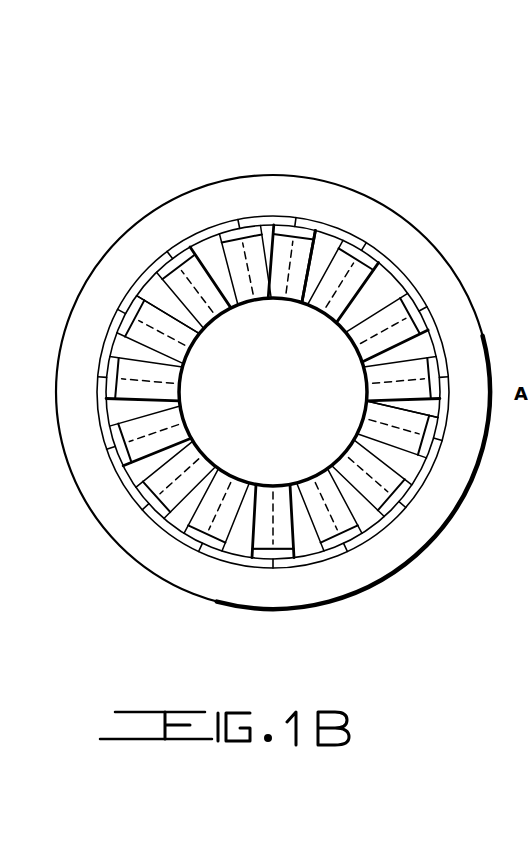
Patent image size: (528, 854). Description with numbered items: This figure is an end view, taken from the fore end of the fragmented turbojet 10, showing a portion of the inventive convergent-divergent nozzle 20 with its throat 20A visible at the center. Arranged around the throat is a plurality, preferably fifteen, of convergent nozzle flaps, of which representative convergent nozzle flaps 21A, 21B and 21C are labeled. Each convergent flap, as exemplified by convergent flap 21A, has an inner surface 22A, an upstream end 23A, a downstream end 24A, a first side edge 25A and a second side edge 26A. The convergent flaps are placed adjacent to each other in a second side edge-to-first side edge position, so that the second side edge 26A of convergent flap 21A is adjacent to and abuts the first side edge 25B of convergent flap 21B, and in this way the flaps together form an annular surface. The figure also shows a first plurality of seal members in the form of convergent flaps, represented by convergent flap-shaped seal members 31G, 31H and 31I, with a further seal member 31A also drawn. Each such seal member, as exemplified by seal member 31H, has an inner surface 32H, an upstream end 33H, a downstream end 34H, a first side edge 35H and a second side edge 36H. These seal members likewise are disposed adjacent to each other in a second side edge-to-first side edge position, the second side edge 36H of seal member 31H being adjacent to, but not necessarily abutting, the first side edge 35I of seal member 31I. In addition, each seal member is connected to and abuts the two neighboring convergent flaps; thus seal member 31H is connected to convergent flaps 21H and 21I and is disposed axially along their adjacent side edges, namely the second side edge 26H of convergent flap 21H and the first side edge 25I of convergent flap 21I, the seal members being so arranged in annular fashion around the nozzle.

The turbojet 10 is at (320, 99).
The convergent-divergent nozzle 20 is at (400, 268).
The throat 20A is at (245, 414).
The convergent nozzle flap 21A is at (214, 256).
The convergent nozzle flap 21B is at (307, 297).
The convergent nozzle flap 21C is at (337, 250).
The convergent nozzle flap 21H is at (353, 530).
The convergent nozzle flap 21I is at (300, 560).
The inner surface 22A is at (228, 293).
The upstream end 23A is at (215, 256).
The downstream end 24A is at (222, 296).
The first side edge 25A is at (118, 230).
The first side edge 25B is at (252, 290).
The first side edge 25I is at (292, 468).
The second side edge 26A is at (287, 235).
The second side edge 26H is at (346, 462).
The convergent flap-shaped seal member 31A is at (218, 297).
The convergent flap-shaped seal member 31G is at (388, 478).
The convergent flap-shaped seal member 31H is at (340, 533).
The convergent flap-shaped seal member 31I is at (272, 540).
The inner surface 32H is at (318, 485).
The upstream end 33H is at (352, 535).
The downstream end 34H is at (322, 515).
The first side edge 35H is at (357, 523).
The first side edge 35I is at (282, 497).
The second side edge 36H is at (317, 533).